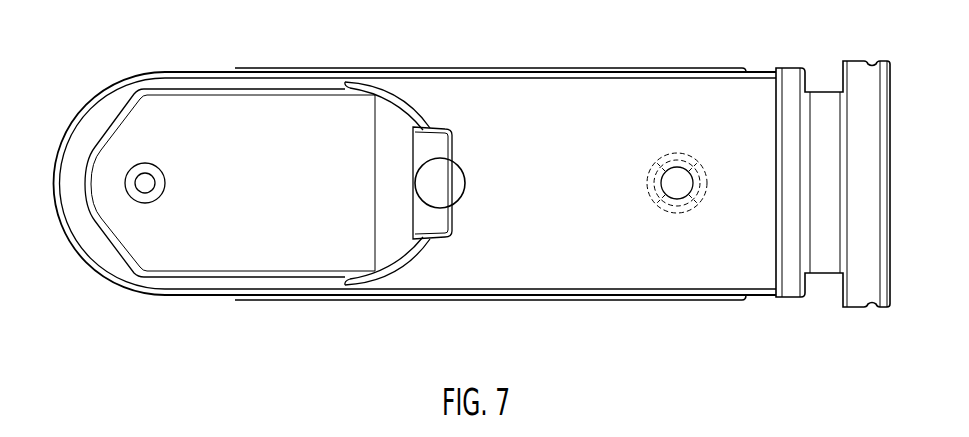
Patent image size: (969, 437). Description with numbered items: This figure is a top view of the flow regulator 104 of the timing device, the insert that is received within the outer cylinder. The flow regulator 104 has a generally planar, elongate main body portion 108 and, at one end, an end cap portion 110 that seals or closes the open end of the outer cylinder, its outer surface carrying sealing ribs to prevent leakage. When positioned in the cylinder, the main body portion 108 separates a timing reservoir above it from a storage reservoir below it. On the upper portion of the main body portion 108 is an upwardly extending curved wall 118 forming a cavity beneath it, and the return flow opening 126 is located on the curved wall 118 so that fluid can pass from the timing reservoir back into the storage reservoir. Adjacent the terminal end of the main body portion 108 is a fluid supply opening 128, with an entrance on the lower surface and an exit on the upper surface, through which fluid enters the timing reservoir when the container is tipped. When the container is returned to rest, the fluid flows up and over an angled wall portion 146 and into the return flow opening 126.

The flow regulator 104 is at (563, 65).
The main body portion 108 is at (489, 291).
The end cap portion 110 is at (859, 67).
The curved wall 118 is at (618, 148).
The return flow opening 126 is at (436, 172).
The fluid supply opening 128 is at (147, 165).
The angled wall portion 146 is at (390, 138).